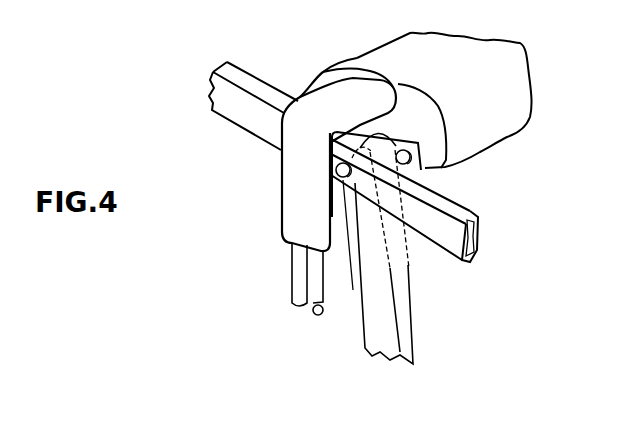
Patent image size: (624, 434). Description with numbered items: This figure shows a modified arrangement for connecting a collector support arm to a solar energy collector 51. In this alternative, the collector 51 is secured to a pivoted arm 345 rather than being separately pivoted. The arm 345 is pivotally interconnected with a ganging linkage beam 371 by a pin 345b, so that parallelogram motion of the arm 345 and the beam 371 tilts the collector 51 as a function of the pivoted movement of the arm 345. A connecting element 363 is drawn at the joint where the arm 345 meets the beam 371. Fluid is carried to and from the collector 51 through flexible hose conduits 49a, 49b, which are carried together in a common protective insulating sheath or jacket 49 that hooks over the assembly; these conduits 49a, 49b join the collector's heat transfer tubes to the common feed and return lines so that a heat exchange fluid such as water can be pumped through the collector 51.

The solar energy collector 51 is at (387, 62).
The protective insulating sheath or jacket 49 is at (283, 208).
The flexible hose conduit 49a is at (290, 273).
The flexible hose conduit 49b is at (323, 308).
The ganging linkage beam 371 is at (451, 263).
The mounting plate with pins 363 is at (425, 170).
The pivoted arm 345 is at (405, 342).
The pin 345b is at (353, 290).